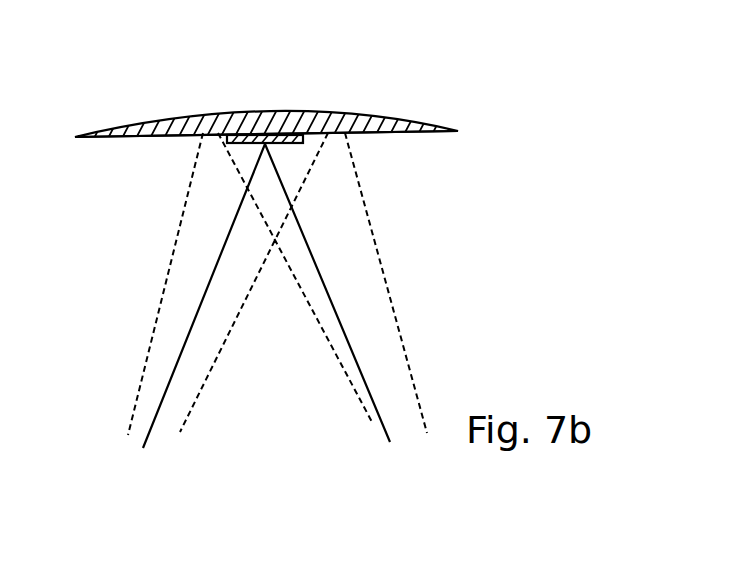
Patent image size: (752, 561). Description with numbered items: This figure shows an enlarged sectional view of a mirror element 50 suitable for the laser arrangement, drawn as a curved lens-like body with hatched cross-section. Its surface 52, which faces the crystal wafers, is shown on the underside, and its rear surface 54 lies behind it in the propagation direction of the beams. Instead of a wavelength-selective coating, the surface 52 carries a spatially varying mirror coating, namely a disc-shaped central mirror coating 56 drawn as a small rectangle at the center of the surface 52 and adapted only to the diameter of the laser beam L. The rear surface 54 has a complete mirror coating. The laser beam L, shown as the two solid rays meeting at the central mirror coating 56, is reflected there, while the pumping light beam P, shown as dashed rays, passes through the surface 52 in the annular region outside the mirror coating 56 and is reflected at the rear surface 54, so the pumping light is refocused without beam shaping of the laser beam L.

The mirror element 50 is at (262, 97).
The surface 52 is at (411, 133).
The rear surface 54 is at (145, 121).
The central mirror coating 56 is at (293, 143).
The pumping light beam P is at (143, 368).
The laser beam L is at (175, 378).